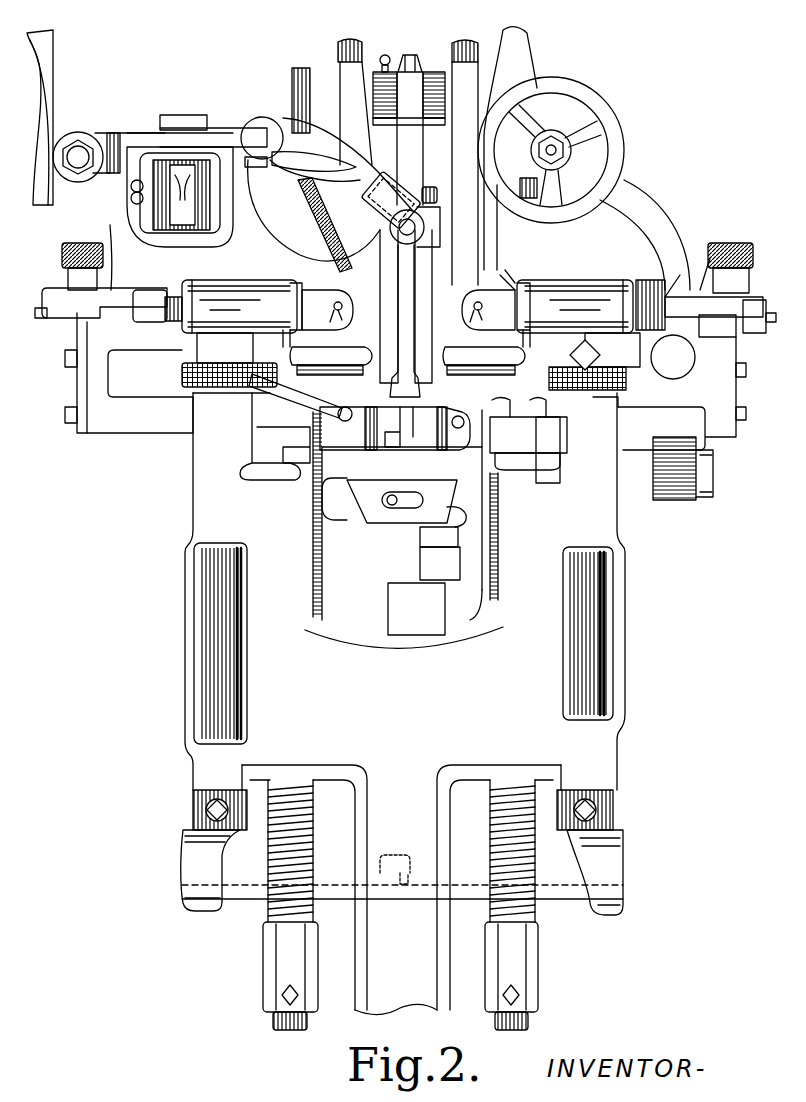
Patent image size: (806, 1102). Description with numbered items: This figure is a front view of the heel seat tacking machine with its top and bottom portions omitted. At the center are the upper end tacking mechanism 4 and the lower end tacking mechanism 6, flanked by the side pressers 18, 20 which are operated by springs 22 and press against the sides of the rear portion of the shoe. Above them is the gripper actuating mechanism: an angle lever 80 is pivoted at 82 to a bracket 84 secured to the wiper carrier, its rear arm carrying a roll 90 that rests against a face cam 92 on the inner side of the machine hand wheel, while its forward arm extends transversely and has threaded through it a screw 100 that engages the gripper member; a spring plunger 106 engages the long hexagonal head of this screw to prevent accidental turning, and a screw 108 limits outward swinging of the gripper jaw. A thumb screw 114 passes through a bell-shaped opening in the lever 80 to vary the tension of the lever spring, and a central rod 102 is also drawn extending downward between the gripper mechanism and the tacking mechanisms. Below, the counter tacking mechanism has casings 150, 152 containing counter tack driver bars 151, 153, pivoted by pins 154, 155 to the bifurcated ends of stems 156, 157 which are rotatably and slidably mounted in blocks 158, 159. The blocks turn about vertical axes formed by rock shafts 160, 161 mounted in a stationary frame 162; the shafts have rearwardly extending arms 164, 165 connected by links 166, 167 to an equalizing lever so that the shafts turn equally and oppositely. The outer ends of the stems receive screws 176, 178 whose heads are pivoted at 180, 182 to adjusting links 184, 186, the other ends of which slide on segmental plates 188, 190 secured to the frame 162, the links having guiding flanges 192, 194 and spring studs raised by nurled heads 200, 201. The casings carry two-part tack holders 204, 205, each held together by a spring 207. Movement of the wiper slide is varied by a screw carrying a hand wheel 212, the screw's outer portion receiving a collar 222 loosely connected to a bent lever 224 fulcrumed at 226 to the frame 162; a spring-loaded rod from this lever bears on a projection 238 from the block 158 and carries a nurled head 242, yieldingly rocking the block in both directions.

The upper end tacking mechanism 4 is at (425, 428).
The lower end tacking mechanism 6 is at (430, 512).
The side presser 18 is at (548, 437).
The side presser 20 is at (300, 440).
The springs 22 is at (490, 828).
The angle lever 80 is at (133, 135).
The pivot 82 is at (185, 115).
The bracket 84 is at (275, 230).
The roll 90 is at (70, 130).
The face cam 92 is at (45, 45).
The screw 100 is at (425, 230).
The rod 102 is at (410, 292).
The spring plunger 106 is at (435, 196).
The screw 108 is at (412, 55).
The thumb screw 114 is at (260, 117).
The tacker casing 150 is at (508, 280).
The counter tack driver bar 151 is at (505, 35).
The tacker casing 152 is at (330, 275).
The counter tack driver bar 153 is at (345, 42).
The pin 154 is at (474, 308).
The pin 155 is at (327, 310).
The stem 156 is at (536, 345).
The stem 157 is at (290, 340).
The block 158 is at (542, 408).
The block 159 is at (200, 345).
The rock shaft 160 is at (595, 280).
The rock shaft 161 is at (262, 272).
The stationary frame 162 is at (545, 748).
The arm 164 is at (608, 850).
The arm 165 is at (192, 872).
The link 166 is at (555, 893).
The link 167 is at (238, 892).
The screw 176 is at (650, 330).
The screw 178 is at (170, 310).
The pivot 180 is at (660, 268).
The pivot 182 is at (160, 290).
The adjusting link 184 is at (690, 290).
The adjusting link 186 is at (112, 270).
The segmental plate 188 is at (760, 300).
The segmental plate 190 is at (40, 308).
The guiding flange 192 is at (730, 330).
The guiding flange 194 is at (88, 318).
The nurled head 200 is at (742, 243).
The nurled head 201 is at (65, 243).
The tack holder 204 is at (432, 365).
The tack holder 205 is at (378, 355).
The spring 207 is at (282, 368).
The hand wheel 212 is at (615, 160).
The collar 222 is at (578, 143).
The bent lever 224 is at (668, 225).
The fulcrum 226 is at (705, 492).
The projection 238 is at (648, 345).
The nurled head 242 is at (675, 360).